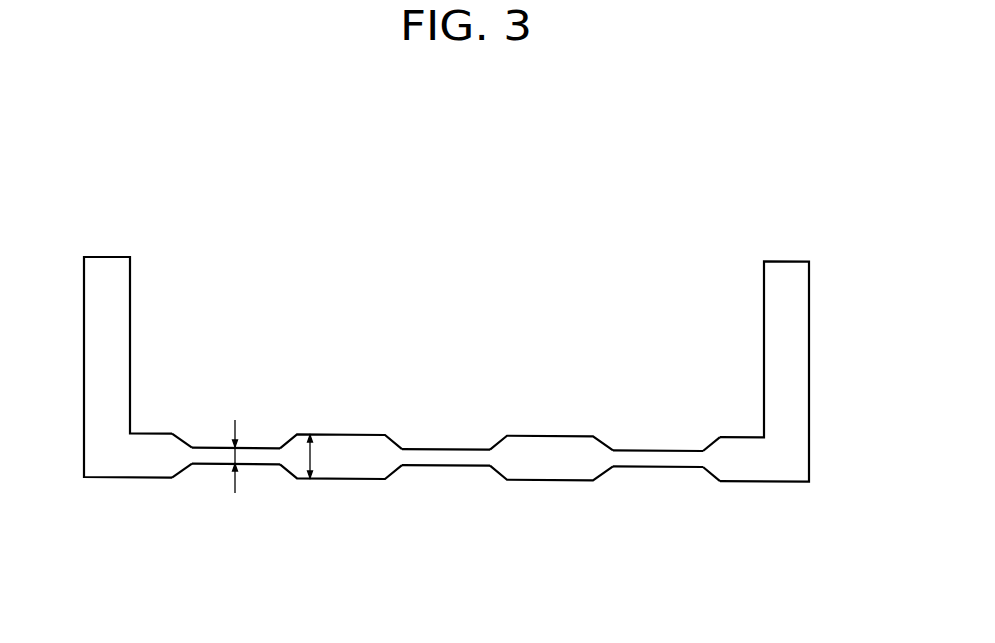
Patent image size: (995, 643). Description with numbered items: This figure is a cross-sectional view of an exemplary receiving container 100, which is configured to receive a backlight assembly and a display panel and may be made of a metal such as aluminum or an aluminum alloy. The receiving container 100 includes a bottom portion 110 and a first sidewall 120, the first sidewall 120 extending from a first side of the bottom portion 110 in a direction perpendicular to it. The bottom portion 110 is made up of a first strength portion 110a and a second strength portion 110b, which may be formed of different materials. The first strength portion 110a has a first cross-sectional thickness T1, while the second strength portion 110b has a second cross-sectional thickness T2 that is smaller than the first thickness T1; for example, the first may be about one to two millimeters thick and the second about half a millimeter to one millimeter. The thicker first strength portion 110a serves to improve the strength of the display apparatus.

The receiving container 100 is at (441, 199).
The bottom portion 110 is at (470, 550).
The first strength portion 110a is at (358, 460).
The second strength portion 110b is at (438, 458).
The first sidewall 120 is at (98, 392).
The first cross-sectional thickness T1 is at (324, 456).
The second cross-sectional thickness T2 is at (249, 466).